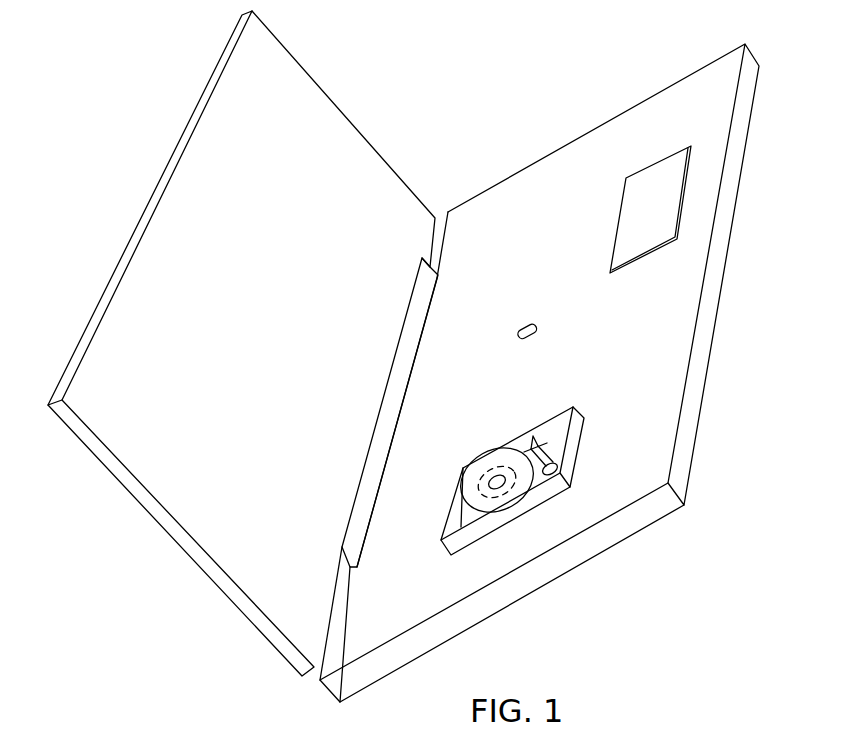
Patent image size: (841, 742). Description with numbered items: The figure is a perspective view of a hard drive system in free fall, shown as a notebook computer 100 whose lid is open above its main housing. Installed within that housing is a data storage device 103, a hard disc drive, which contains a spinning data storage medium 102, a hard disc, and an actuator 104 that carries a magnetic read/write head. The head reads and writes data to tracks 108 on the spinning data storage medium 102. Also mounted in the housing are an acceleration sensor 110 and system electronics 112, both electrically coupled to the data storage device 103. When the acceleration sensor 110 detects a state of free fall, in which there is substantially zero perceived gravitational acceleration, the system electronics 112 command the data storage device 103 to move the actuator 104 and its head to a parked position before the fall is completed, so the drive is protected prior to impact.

The computer 100 is at (497, 186).
The data storage medium 102 is at (512, 458).
The data storage device 103 is at (502, 517).
The actuator 104 is at (565, 458).
The tracks 108 is at (488, 475).
The acceleration sensor 110 is at (515, 318).
The system electronics 112 is at (657, 197).